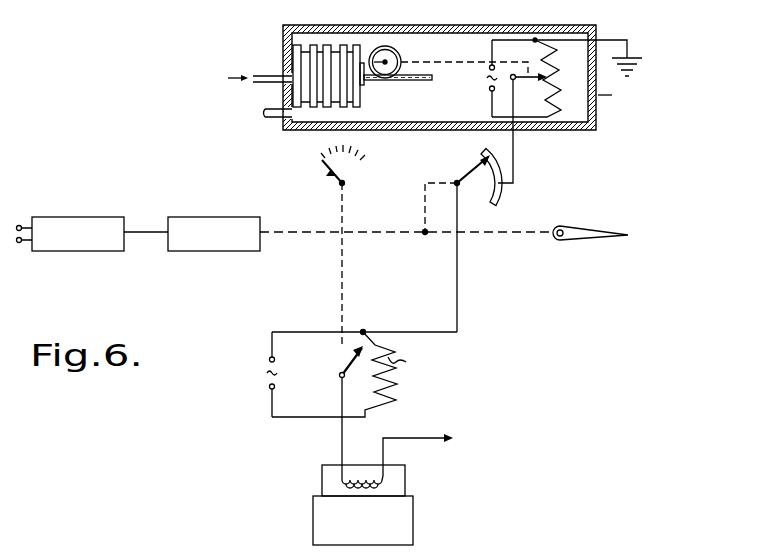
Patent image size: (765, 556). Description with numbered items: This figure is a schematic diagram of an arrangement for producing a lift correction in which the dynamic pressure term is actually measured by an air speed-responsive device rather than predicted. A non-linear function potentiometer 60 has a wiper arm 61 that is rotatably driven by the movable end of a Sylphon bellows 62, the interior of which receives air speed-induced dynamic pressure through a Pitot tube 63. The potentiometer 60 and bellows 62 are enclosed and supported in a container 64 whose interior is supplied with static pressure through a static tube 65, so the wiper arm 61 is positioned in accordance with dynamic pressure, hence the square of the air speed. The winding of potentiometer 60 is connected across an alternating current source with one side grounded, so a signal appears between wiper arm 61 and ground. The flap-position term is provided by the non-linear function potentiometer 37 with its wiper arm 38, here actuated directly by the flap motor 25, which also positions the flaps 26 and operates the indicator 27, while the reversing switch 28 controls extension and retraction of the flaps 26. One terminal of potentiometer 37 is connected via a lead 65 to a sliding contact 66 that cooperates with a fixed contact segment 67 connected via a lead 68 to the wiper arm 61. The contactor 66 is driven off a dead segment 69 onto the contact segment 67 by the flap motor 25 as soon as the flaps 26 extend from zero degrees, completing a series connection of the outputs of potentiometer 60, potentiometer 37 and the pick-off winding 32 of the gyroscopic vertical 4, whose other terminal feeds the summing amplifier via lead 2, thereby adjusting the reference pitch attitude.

The lead 2 is at (418, 438).
The gyroscopic vertical 4 is at (413, 512).
The flap motor 25 is at (207, 217).
The flaps 26 is at (572, 241).
The indicator 27 is at (327, 165).
The reversing switch 28 is at (75, 217).
The pick-off winding 32 is at (400, 479).
The non-linear function potentiometer 37 is at (387, 397).
The wiper arm 38 is at (350, 360).
The non-linear function potentiometer 60 is at (553, 104).
The wiper arm 61 is at (513, 84).
The Sylphon bellows 62 is at (305, 46).
The Pitot tube 63 is at (253, 75).
The container 64 is at (520, 25).
The static tube / lead 65 is at (265, 109).
The sliding contact 66 is at (470, 172).
The fixed contact segment 67 is at (497, 200).
The lead 68 is at (513, 157).
The dead segment 69 is at (486, 158).